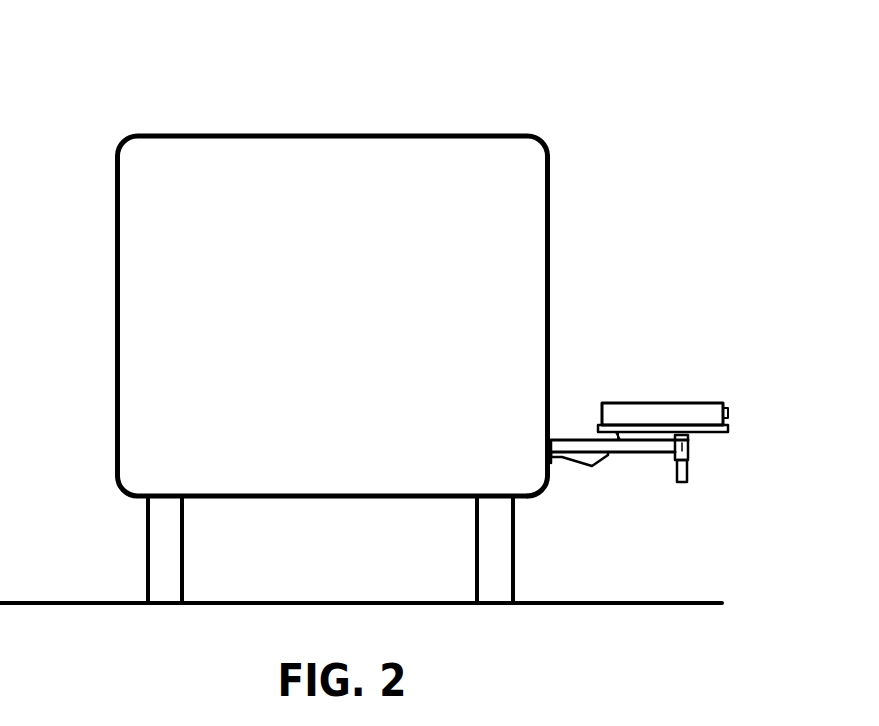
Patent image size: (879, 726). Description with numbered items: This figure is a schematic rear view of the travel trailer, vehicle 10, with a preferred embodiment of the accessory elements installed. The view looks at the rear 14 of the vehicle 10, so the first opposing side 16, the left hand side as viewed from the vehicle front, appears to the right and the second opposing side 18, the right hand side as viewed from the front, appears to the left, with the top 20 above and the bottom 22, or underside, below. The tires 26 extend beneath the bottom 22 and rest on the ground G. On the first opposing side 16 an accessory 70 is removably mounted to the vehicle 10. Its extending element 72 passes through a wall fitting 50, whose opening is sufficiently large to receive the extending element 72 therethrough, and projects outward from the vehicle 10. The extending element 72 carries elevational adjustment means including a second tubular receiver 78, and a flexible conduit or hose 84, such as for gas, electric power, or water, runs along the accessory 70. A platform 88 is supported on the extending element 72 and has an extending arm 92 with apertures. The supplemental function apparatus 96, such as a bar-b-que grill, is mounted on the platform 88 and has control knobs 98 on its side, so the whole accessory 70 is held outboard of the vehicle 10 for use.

The vehicle 10 is at (487, 75).
The rear 14 is at (302, 321).
The first opposing side 16 is at (550, 228).
The second opposing side 18 is at (115, 237).
The top 20 is at (308, 133).
The bottom 22 is at (297, 498).
The tires 26 is at (170, 558).
The wall fitting 50 is at (553, 437).
The accessory 70 is at (693, 294).
The extending element 72 is at (630, 447).
The second tubular receiver 78 is at (688, 447).
The flexible conduit or hose 84 is at (570, 460).
The platform 88 is at (720, 430).
The extending arm 92 is at (687, 470).
The supplemental function apparatus 96 is at (668, 405).
The control knobs 98 is at (727, 413).
The ground G is at (622, 602).